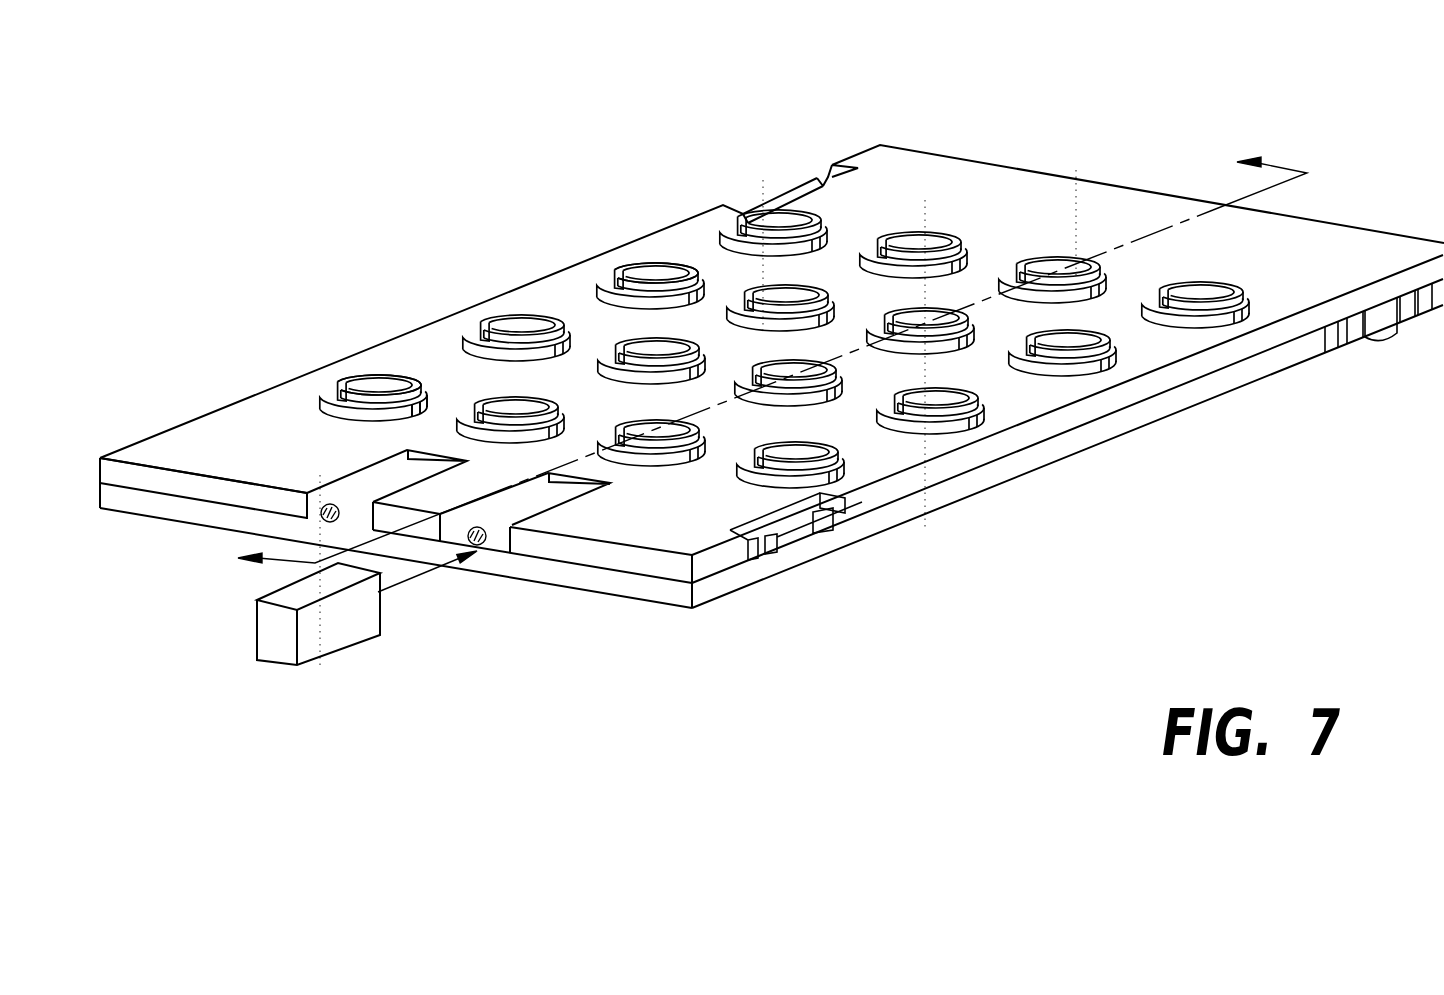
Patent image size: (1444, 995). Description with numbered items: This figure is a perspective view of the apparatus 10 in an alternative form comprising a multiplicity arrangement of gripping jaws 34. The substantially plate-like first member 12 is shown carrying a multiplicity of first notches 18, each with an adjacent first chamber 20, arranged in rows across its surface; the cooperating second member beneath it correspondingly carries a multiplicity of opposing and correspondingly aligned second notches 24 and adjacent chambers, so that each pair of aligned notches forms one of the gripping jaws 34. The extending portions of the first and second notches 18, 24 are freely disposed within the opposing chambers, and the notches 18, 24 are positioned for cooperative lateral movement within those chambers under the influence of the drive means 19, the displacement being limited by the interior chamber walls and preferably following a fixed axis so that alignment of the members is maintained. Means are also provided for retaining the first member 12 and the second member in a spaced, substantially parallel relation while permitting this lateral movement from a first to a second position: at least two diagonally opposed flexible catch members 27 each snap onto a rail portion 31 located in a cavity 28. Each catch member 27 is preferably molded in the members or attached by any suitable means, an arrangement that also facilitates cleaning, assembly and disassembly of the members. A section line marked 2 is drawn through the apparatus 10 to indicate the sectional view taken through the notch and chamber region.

The apparatus 10 is at (388, 181).
The first member 12 is at (988, 454).
The first notch 18 is at (320, 394).
The drive means 19 is at (343, 637).
The first chamber 20 is at (430, 398).
The second notch 24 is at (375, 375).
The flexible catch member 27 is at (793, 528).
The cavity 28 is at (858, 509).
The rail portion 31 is at (759, 554).
The gripping jaws 34 is at (838, 257).
The section line 2- 2 is at (754, 362).